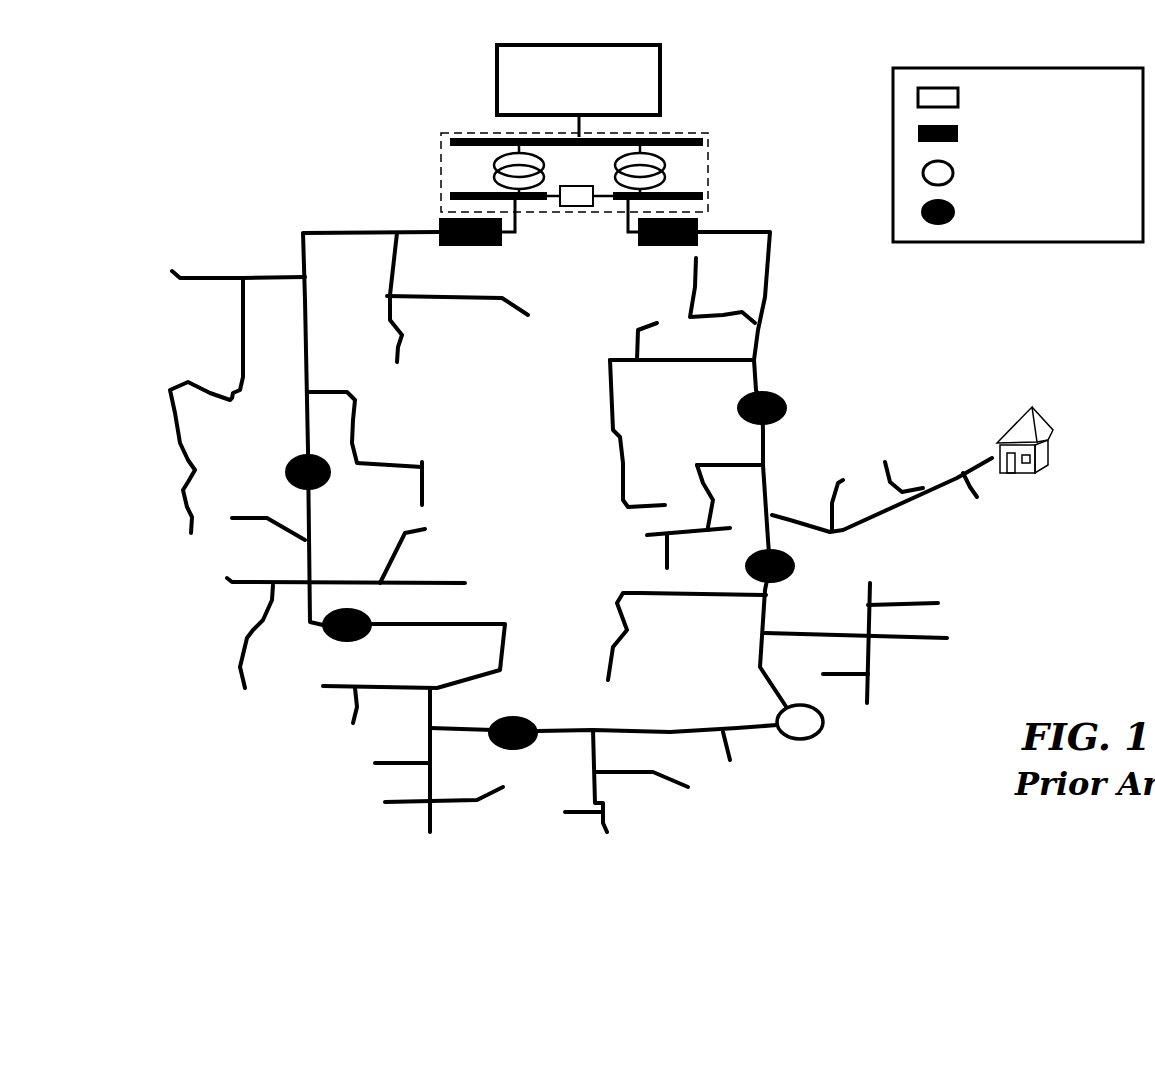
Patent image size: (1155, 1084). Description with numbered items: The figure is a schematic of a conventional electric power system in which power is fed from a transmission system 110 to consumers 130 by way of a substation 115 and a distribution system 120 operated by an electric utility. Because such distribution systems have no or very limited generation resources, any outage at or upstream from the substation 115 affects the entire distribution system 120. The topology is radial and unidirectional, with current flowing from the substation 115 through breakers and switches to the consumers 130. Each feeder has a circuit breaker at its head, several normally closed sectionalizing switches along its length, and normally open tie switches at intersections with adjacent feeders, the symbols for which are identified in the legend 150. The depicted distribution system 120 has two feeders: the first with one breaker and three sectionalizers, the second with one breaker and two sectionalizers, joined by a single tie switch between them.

The transmission system 110 is at (497, 107).
The substation 115 is at (692, 127).
The distribution system 120 is at (500, 521).
The consumers 130 is at (1043, 410).
The legend 150 is at (953, 242).